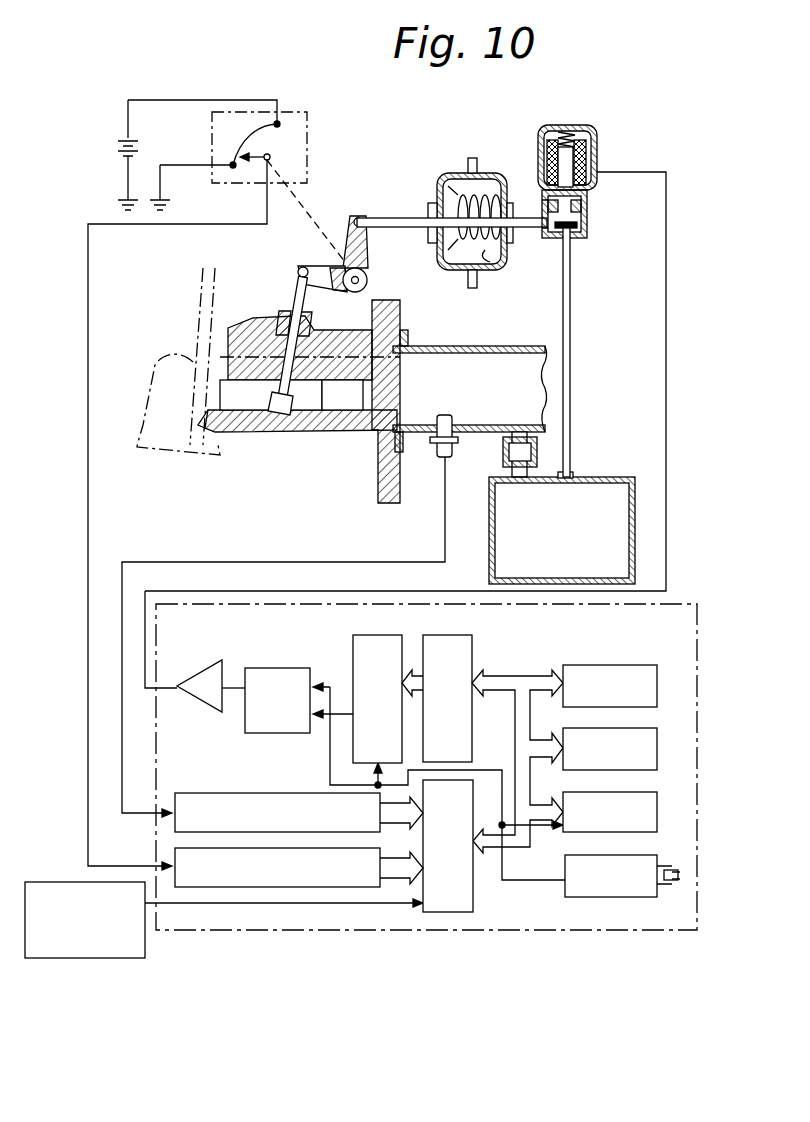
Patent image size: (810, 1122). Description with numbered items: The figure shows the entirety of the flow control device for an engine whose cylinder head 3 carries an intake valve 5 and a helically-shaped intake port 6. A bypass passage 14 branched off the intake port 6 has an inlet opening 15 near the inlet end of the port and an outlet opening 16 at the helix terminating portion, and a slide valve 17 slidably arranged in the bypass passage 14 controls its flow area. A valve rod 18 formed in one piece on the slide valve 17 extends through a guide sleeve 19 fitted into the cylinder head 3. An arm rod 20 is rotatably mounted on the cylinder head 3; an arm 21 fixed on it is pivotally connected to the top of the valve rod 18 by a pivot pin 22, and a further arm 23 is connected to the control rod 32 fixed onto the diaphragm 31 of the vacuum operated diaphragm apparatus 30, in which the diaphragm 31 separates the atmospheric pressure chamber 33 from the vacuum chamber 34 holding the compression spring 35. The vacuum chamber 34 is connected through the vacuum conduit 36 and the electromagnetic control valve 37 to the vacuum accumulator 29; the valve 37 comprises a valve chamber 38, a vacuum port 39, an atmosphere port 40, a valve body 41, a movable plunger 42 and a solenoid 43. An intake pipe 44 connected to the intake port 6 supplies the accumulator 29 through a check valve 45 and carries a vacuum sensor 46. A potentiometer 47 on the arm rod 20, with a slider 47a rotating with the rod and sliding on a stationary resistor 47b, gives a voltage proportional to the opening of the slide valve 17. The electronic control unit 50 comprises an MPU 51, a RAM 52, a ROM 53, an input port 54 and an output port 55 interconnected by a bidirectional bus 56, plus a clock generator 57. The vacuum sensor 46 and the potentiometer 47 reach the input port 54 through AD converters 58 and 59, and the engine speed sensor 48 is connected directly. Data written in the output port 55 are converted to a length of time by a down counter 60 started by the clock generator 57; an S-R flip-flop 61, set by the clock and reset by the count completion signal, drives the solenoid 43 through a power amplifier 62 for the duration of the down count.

The cylinder head 3 is at (246, 326).
The intake valve 5 is at (178, 360).
The helically-shaped intake port 6 is at (382, 338).
The bypass passage 14 is at (248, 406).
The inlet opening 15 is at (343, 410).
The outlet opening 16 is at (213, 440).
The slide valve 17 is at (288, 416).
The valve rod 18 is at (312, 318).
The guide sleeve 19 is at (290, 305).
The arm rod 20 is at (367, 281).
The arm 21 is at (315, 268).
The pivot pin 22 is at (298, 269).
The arm 23 is at (366, 250).
The vacuum accumulator 29 is at (605, 477).
The vacuum operated diaphragm apparatus 30 is at (432, 182).
The diaphragm 31 is at (462, 180).
The control rod 32 is at (390, 218).
The atmospheric pressure chamber 33 is at (455, 268).
The vacuum chamber 34 is at (488, 258).
The compression spring 35 is at (492, 190).
The vacuum conduit 36 is at (520, 232).
The electromagnetic control valve 37 is at (588, 125).
The valve chamber 38 is at (580, 228).
The vacuum port 39 is at (575, 240).
The atmosphere port 40 is at (585, 203).
The valve body 41 is at (552, 240).
The movable plunger 42 is at (575, 165).
The solenoid 43 is at (588, 142).
The intake pipe 44 is at (470, 349).
The check valve 45 is at (503, 455).
The vacuum sensor 46 is at (440, 460).
The potentiometer 47 is at (312, 128).
The slider 47a is at (246, 168).
The stationary resistor 47b is at (225, 136).
The engine speed sensor 48 is at (62, 882).
The electronic control unit 50 is at (688, 594).
The microprocessor (MPU) 51 is at (660, 815).
The random-access memory (RAM) 52 is at (658, 758).
The read-only memory (ROM) 53 is at (658, 688).
The input port 54 is at (465, 912).
The output port 55 is at (452, 636).
The bidirectional bus 56 is at (520, 678).
The clock generator 57 is at (634, 898).
The AD converter 58 is at (222, 780).
The AD converter 59 is at (274, 888).
The down counter 60 is at (368, 636).
The S-R flip-flop 61 is at (278, 668).
The power amplifier 62 is at (205, 672).